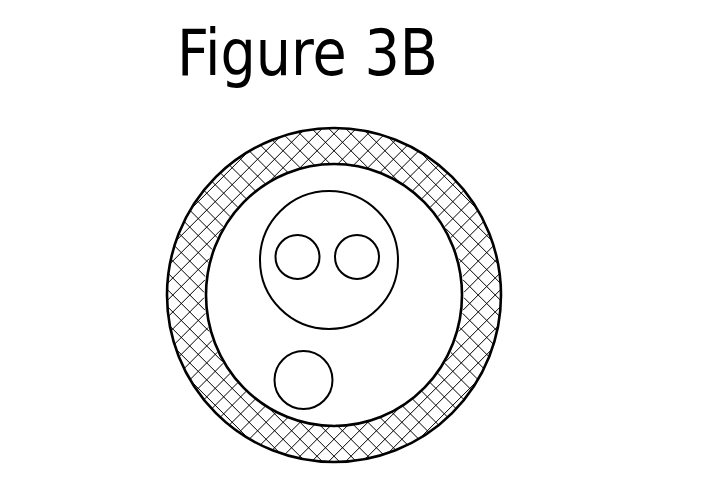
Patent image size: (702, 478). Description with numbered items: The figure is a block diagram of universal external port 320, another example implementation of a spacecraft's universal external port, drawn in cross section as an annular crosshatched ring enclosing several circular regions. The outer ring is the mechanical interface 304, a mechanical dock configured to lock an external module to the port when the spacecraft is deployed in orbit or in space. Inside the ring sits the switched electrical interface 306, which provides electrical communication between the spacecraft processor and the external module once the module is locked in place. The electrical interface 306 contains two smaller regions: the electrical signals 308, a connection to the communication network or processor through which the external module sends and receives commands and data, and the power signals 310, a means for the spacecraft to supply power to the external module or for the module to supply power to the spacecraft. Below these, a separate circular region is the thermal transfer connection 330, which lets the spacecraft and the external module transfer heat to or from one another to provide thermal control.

The universal external port 320 is at (427, 157).
The mechanical interface 304 is at (483, 285).
The electrical interface 306 is at (393, 227).
The power signals 310 is at (283, 277).
The electrical signals 308 is at (377, 268).
The thermal transfer connection 330 is at (330, 388).